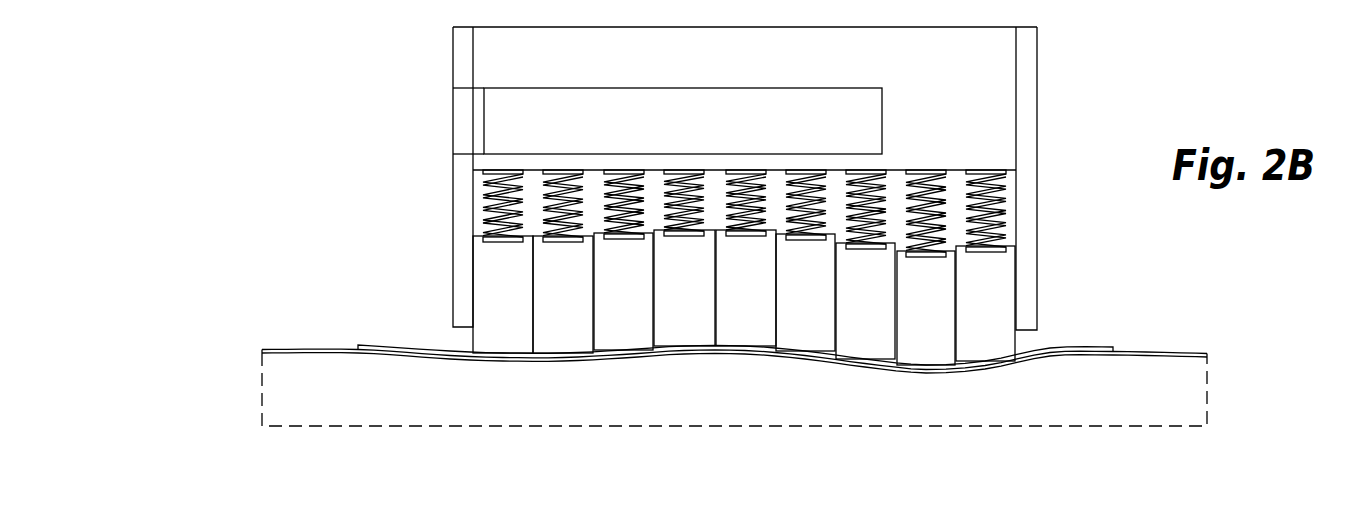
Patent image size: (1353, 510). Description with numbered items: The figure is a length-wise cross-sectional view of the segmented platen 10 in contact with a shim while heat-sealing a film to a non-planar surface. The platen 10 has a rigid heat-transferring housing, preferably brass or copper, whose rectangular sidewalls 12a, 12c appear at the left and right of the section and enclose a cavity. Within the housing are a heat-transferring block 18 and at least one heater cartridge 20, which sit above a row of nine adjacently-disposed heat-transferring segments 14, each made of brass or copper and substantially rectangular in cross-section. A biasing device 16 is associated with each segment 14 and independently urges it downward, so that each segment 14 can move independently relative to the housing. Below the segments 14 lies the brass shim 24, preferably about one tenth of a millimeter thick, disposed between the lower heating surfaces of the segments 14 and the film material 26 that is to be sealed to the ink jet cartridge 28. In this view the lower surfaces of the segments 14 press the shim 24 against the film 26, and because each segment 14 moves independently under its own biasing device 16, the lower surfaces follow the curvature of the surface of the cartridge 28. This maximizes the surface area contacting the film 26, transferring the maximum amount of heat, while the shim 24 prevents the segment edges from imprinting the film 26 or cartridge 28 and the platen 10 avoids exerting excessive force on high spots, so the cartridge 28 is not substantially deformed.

The segmented platen 10 is at (312, 49).
The sidewall 12a is at (453, 60).
The sidewall 12c is at (1038, 142).
The heat-transferring segments 14 is at (1055, 343).
The biasing devices 16 is at (1003, 218).
The heat-transferring block 18 is at (746, 73).
The heater cartridge 20 is at (687, 127).
The shim 24 is at (365, 346).
The film material 26 is at (273, 350).
The ink jet cartridge 28 is at (702, 401).